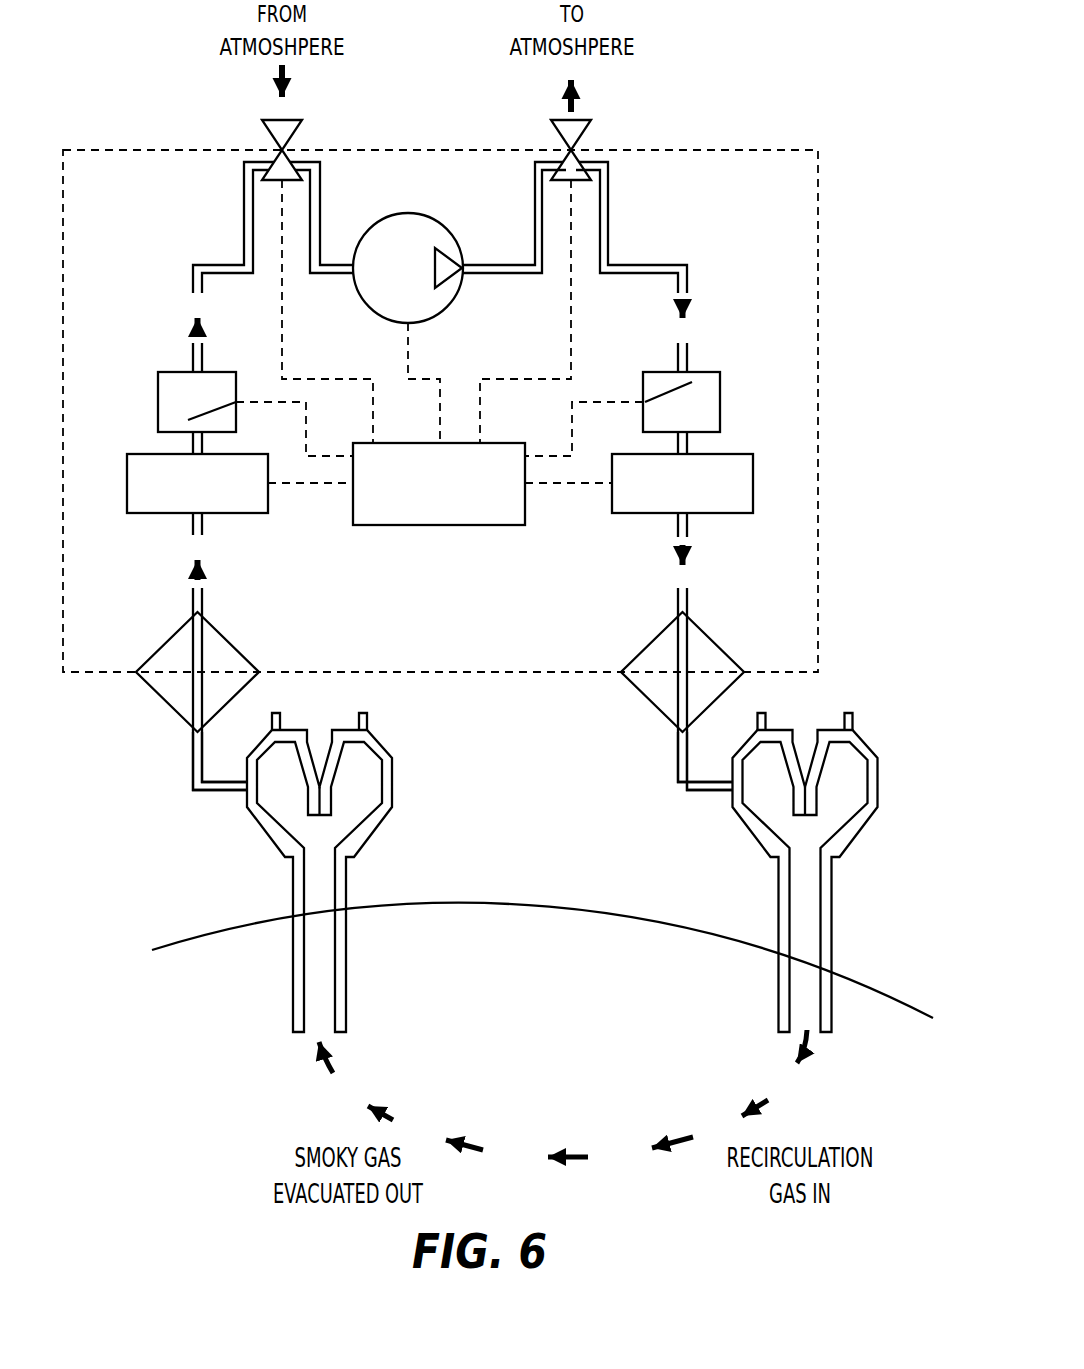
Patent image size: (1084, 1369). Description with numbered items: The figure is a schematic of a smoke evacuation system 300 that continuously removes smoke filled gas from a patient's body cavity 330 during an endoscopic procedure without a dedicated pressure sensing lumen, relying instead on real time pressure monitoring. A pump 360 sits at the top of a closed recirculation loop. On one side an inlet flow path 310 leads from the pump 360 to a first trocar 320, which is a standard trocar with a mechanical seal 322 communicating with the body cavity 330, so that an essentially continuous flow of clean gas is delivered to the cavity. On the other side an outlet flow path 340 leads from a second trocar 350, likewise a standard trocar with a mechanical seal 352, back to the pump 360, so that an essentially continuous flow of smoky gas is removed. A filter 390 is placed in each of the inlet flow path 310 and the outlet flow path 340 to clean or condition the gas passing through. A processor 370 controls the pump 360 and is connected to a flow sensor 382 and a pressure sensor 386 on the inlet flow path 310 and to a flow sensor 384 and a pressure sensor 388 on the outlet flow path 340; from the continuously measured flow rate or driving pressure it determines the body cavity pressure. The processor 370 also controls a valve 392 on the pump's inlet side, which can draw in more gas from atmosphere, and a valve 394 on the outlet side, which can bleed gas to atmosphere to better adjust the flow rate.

The smoke evacuation system 300 is at (150, 123).
The inlet flow path 310 is at (632, 758).
The first trocar 320 is at (833, 910).
The mechanical seal 322 is at (818, 797).
The body cavity 330 is at (564, 943).
The outlet flow path 340 is at (176, 774).
The second trocar 350 is at (346, 890).
The mechanical seal 352 is at (332, 800).
The pump 360 is at (450, 304).
The processor 370 is at (418, 497).
The flow sensor 382 is at (661, 497).
The flow sensor 384 is at (175, 497).
The pressure sensor 386 is at (720, 403).
The pressure sensor 388 is at (157, 398).
The filter 390 is at (225, 633).
The valve 392 is at (303, 127).
The valve 394 is at (593, 127).